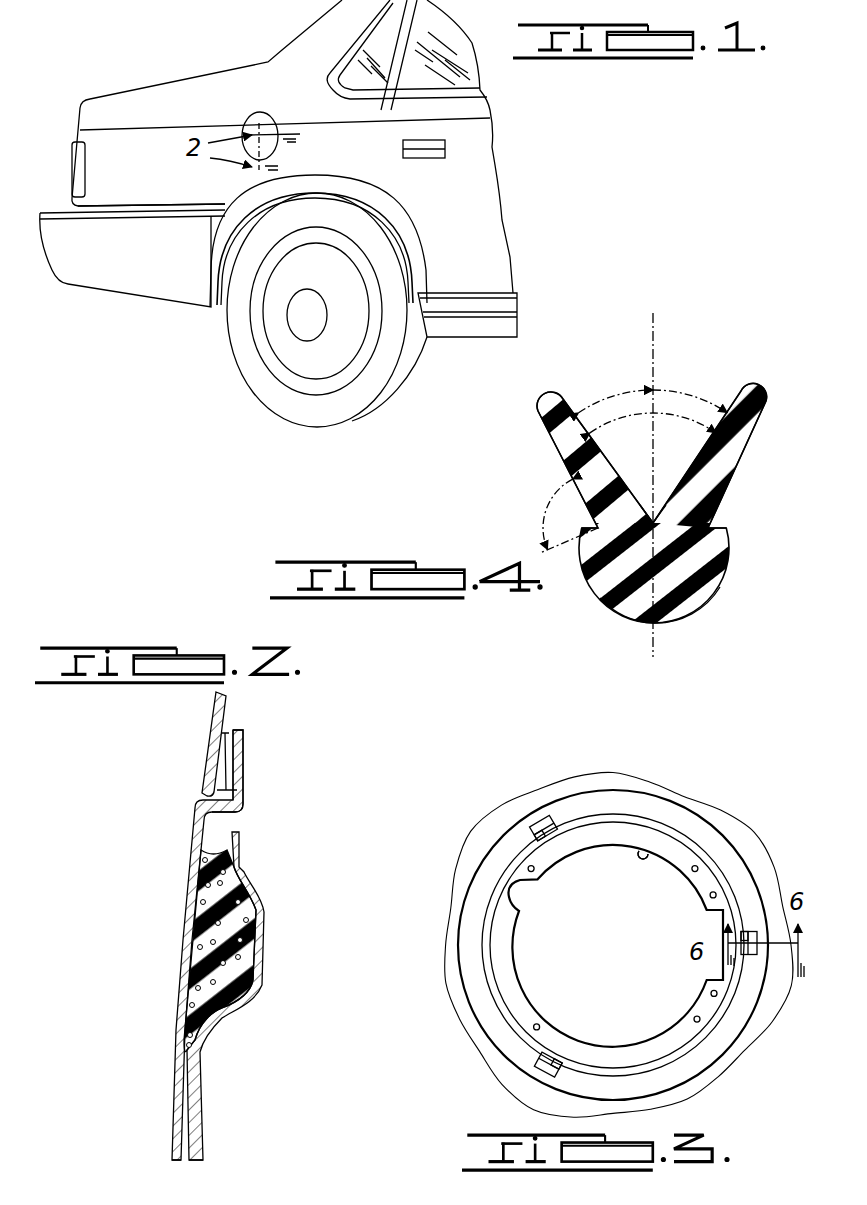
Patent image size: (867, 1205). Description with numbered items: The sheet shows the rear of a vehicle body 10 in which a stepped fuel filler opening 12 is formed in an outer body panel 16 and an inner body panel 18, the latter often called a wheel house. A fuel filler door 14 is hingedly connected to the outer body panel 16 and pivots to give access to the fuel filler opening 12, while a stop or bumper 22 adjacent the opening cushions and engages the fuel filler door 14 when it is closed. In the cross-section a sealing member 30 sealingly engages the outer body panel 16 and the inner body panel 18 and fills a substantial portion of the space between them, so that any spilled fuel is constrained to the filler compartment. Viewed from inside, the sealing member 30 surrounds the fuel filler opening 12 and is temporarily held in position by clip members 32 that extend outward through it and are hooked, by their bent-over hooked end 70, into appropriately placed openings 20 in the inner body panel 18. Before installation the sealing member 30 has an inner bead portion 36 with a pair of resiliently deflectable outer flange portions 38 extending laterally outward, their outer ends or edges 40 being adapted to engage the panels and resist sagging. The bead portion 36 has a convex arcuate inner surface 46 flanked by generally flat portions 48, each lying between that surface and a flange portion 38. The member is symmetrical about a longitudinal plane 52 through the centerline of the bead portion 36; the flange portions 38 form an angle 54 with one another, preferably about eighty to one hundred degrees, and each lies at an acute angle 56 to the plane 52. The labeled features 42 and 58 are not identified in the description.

In FIG. 1, the vehicle body 10 is at (162, 106).
In FIG. 2, the vehicle body 10 is at (174, 1069).
In FIG. 1, the stepped fuel filler opening 12 is at (259, 112).
In FIG. 2, the stepped fuel filler opening 12 is at (229, 798).
In FIG. 3, the stepped fuel filler opening 12 is at (643, 852).
In FIG. 1, the fuel filler door 14 is at (281, 143).
In FIG. 2, the fuel filler door 14 is at (213, 710).
In FIG. 1, the outer body panel 16 is at (148, 187).
In FIG. 2, the outer body panel 16 is at (195, 833).
In FIG. 3, the outer body panel 16 is at (503, 946).
In FIG. 2, the inner body panel 18 is at (239, 836).
In FIG. 3, the inner body panel 18 is at (457, 1010).
In FIG. 3, the openings 20 is at (527, 832).
In FIG. 2, the bumper 22 is at (231, 758).
In FIG. 4, the sealing member 30 is at (734, 572).
In FIG. 2, the sealing member 30 is at (235, 912).
In FIG. 3, the clip members 32 is at (555, 813).
In FIG. 4, the inner bead portion 36 is at (637, 612).
In FIG. 4, the outer flange portions 38 is at (561, 434).
In FIG. 4, the outer ends or edges 40 is at (546, 396).
In FIG. 4, the notch apex 42 is at (655, 518).
In FIG. 4, the convex arcuate inner surface 46 is at (711, 604).
In FIG. 4, the flat portions 48 is at (585, 528).
In FIG. 4, the longitudinal symmetry plane 52 is at (654, 323).
In FIG. 4, the angle 54 is at (653, 437).
In FIG. 4, the acute angle 56 is at (641, 391).
In FIG. 4, the shoulder angle 58 is at (553, 492).
In FIG. 3, the hooked end 70 is at (538, 820).